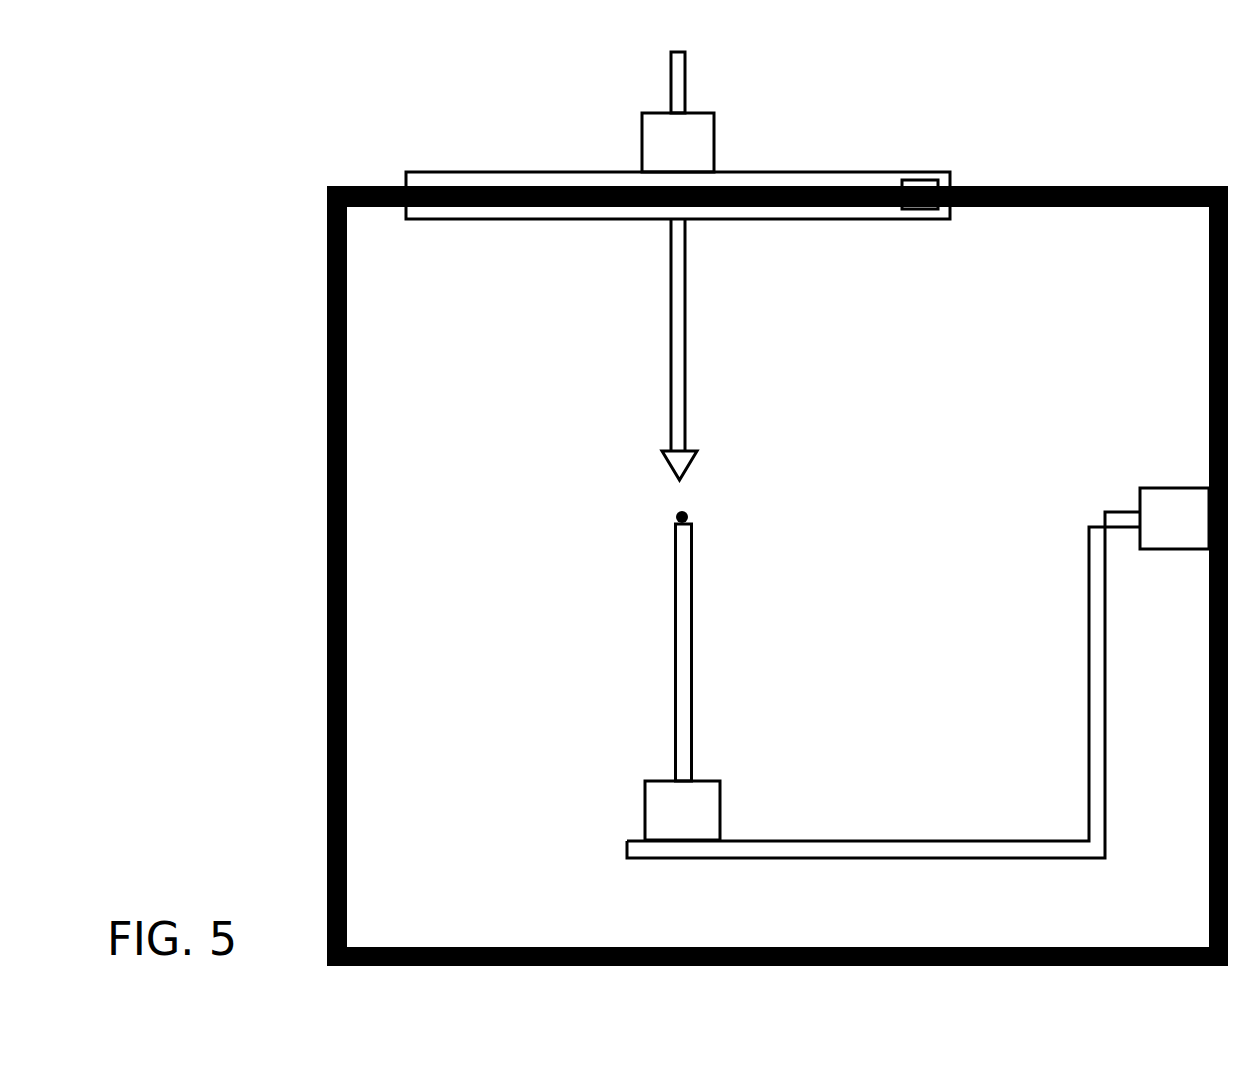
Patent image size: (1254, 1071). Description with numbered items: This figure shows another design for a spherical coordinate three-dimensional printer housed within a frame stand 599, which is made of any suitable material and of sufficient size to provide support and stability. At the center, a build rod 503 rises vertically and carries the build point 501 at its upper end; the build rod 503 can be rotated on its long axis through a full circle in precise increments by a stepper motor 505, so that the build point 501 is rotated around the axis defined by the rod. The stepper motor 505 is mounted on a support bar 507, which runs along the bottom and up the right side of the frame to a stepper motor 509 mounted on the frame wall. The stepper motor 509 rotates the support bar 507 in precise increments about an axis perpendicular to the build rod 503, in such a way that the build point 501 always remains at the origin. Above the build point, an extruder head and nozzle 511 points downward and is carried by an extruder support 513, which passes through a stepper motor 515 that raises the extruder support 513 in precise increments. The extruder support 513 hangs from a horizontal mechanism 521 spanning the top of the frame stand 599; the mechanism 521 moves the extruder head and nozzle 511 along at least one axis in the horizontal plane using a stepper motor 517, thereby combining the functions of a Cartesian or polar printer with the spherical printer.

The build point 501 is at (662, 513).
The build rod 503 is at (666, 652).
The stepper motor 505 is at (666, 810).
The support bar 507 is at (883, 685).
The stepper motor 509 is at (1174, 506).
The extruder head and nozzle 511 is at (664, 465).
The extruder support 513 is at (659, 251).
The stepper motor 515 is at (661, 142).
The stepper motor 517 is at (902, 194).
The mechanism 521 is at (678, 183).
The frame stand 599 is at (777, 576).